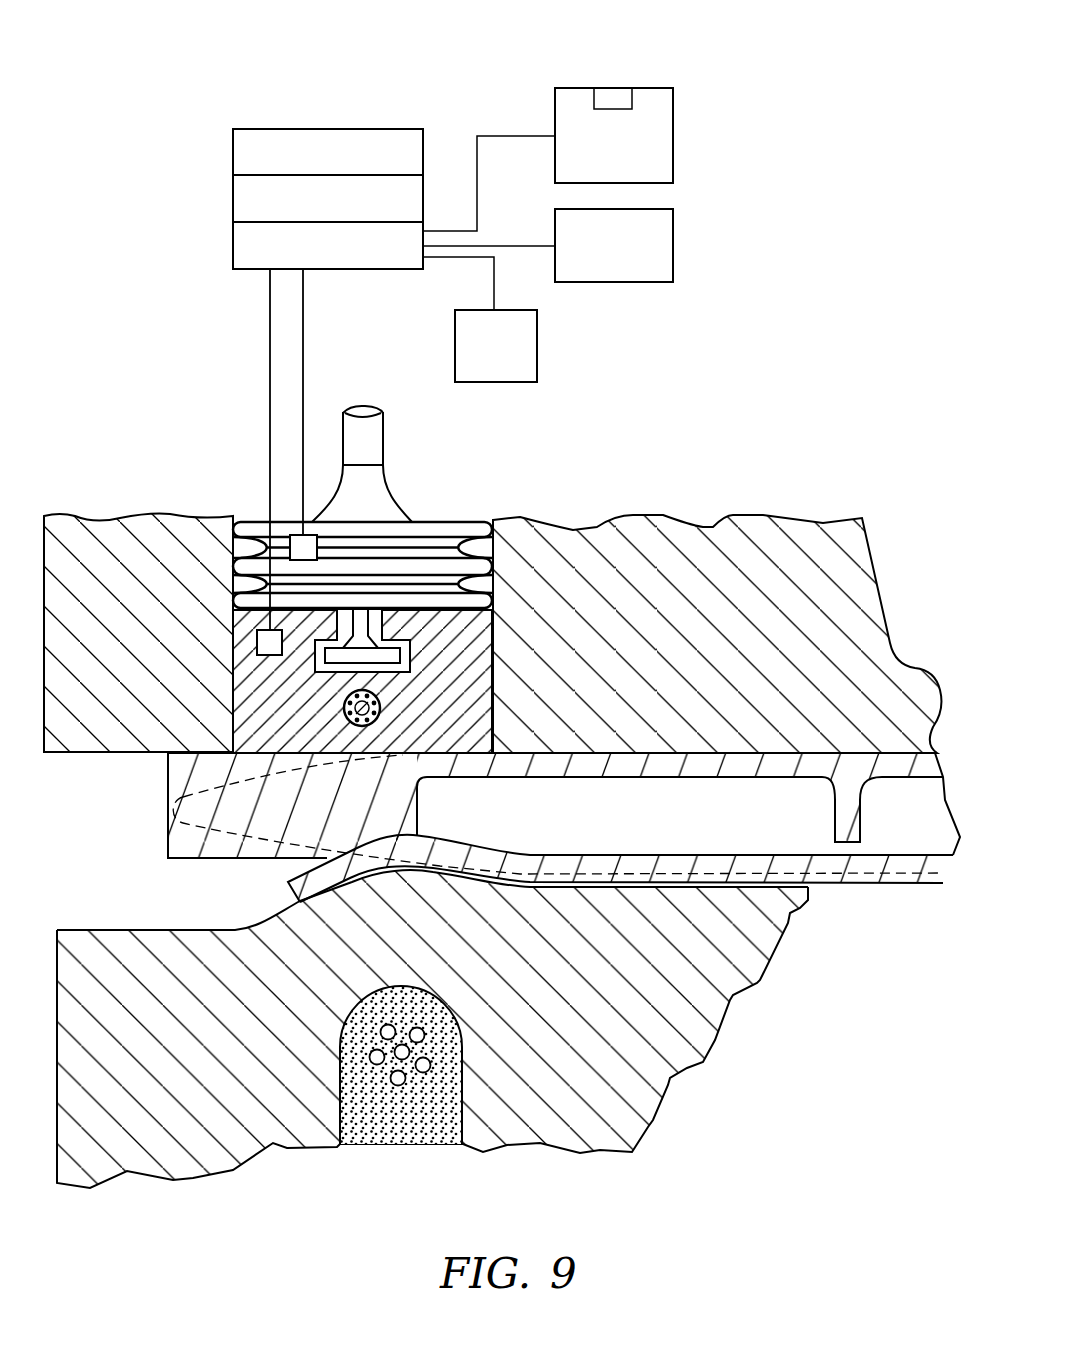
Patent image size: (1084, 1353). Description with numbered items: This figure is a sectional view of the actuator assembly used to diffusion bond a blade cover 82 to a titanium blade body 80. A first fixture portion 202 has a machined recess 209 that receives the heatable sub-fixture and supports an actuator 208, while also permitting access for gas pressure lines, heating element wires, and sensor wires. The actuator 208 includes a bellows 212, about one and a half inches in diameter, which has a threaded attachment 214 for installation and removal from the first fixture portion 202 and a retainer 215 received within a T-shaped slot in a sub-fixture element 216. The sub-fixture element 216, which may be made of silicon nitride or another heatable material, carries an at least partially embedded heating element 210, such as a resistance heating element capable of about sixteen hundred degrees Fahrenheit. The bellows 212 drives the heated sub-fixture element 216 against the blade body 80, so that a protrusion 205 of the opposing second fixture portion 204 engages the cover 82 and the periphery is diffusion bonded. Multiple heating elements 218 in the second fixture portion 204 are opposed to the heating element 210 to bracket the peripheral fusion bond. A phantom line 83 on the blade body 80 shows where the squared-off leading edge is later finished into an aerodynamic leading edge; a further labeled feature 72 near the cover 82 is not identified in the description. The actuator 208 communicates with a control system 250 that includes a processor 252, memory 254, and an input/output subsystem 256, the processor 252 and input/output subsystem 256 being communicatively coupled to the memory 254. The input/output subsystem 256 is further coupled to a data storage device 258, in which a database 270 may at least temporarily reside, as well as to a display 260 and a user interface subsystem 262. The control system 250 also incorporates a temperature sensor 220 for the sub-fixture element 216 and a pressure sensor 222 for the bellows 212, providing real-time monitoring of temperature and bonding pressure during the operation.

The control system 250 is at (453, 198).
The memory 254 is at (304, 166).
The processor 252 is at (304, 211).
The input/output (I/O) subsystem 256 is at (304, 258).
The data storage device 258 is at (591, 162).
The database 270 is at (607, 98).
The display 260 is at (591, 259).
The user interface (UI) subsystem 262 is at (473, 360).
The threaded attachment 214 is at (368, 450).
The actuator 208 is at (478, 498).
The first fixture portion 202 is at (717, 577).
The sub-fixture element 216 is at (482, 616).
The bellows 212 is at (367, 645).
The retainer 215 is at (347, 656).
The heating element 210 is at (402, 704).
The machined recess 209 is at (232, 602).
The pressure sensor 222 is at (302, 550).
The temperature sensor 220 is at (258, 645).
The blade body 80 is at (178, 838).
The phantom line 83 is at (237, 850).
The cover 82 is at (852, 873).
The strip lower surface 72 is at (927, 896).
The protrusion 205 is at (402, 890).
The second fixture portion 204 is at (744, 1038).
The heating elements 218 is at (402, 1103).